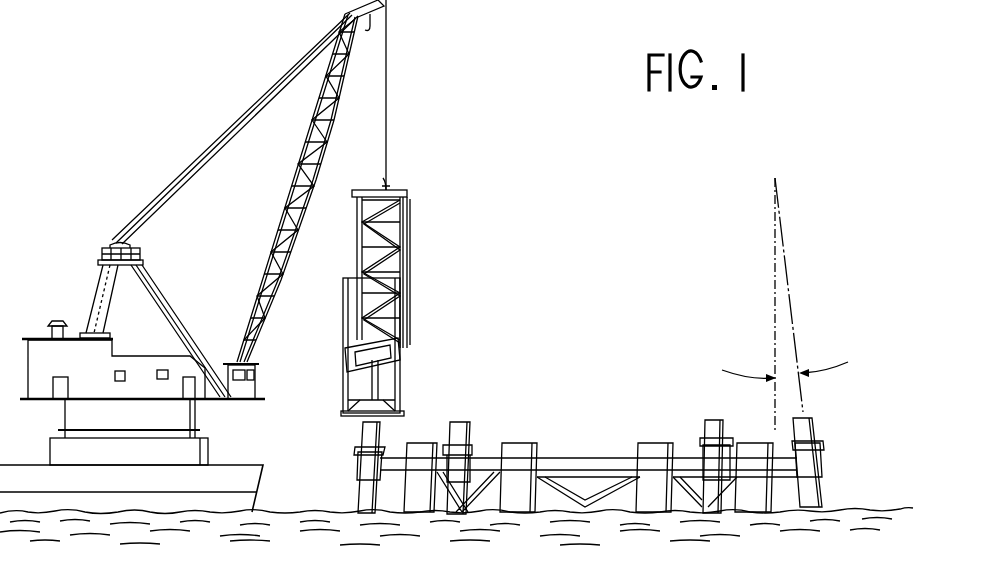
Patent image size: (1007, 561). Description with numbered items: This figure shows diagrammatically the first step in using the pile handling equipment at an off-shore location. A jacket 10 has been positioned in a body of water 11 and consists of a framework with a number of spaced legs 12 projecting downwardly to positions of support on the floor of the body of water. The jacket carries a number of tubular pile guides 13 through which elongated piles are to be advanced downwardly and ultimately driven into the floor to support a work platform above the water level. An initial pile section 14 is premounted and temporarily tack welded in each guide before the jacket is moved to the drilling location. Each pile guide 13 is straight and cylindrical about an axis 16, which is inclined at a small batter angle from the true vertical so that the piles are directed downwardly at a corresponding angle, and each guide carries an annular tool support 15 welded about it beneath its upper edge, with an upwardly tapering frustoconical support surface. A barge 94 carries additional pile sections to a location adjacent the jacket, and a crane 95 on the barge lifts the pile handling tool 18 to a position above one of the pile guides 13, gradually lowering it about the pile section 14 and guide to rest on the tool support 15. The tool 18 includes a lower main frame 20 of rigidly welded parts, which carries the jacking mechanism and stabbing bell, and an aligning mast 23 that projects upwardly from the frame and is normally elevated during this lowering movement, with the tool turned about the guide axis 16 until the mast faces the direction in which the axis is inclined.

The jacket 10 is at (560, 364).
The body of water 11 is at (836, 500).
The legs 12 is at (513, 452).
The pile guides 13 is at (362, 467).
The pile section 14 is at (362, 500).
The annular tool support 15 is at (700, 455).
The axis 16 is at (792, 333).
The pile handling tool 18 is at (434, 276).
The main frame 20 is at (397, 400).
The aligning mast 23 is at (352, 258).
The barge 94 is at (233, 470).
The crane 95 is at (275, 245).